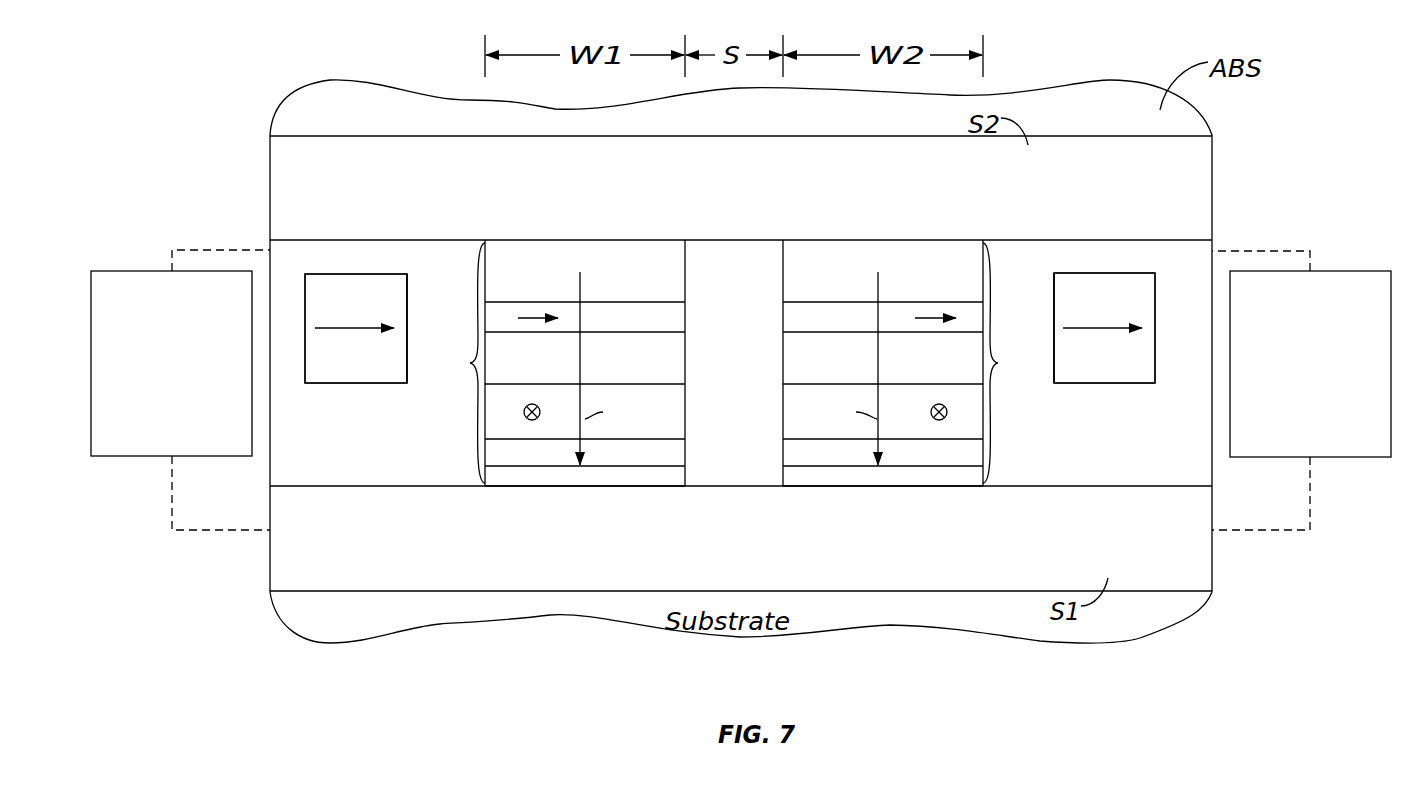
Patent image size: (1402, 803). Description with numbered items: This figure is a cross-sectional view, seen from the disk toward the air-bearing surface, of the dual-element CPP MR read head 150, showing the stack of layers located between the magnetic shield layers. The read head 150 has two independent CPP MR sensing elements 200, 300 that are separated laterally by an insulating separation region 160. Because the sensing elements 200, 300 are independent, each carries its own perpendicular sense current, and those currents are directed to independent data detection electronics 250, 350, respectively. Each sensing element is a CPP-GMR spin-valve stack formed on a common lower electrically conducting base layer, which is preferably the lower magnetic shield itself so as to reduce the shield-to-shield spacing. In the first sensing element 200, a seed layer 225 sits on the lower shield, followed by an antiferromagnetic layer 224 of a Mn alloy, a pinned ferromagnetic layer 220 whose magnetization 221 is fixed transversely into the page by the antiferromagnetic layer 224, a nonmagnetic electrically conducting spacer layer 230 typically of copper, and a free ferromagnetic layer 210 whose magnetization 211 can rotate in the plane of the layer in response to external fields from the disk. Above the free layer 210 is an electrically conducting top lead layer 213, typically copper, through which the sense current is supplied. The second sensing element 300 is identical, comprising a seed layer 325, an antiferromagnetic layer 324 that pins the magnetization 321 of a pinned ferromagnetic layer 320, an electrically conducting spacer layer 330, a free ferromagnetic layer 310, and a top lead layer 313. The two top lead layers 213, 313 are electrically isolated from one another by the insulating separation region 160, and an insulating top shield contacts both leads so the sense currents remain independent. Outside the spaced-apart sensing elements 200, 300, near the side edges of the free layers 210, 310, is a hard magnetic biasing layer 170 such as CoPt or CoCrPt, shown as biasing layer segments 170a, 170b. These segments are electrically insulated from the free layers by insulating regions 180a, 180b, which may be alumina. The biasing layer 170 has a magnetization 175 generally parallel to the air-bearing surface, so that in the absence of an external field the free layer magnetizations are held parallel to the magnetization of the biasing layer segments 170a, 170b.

The read head 150 is at (366, 50).
The insulating separation region 160 is at (762, 248).
The hard magnetic biasing layer 170 is at (305, 287).
The biasing layer segment 170a is at (338, 370).
The biasing layer segment 170b is at (1122, 377).
The magnetization 175 is at (378, 326).
The insulating region 180a is at (418, 328).
The insulating region 180b is at (1040, 343).
The CPP MR sensing element 200 is at (577, 380).
The free ferromagnetic layer 210 is at (677, 330).
The magnetization direction 211 is at (523, 316).
The top lead layer 213 is at (677, 268).
The pinned ferromagnetic layer 220 is at (677, 416).
The magnetization direction 221 is at (533, 403).
The antiferromagnetic layer 224 is at (677, 462).
The seed layer 225 is at (655, 477).
The nonmagnetic electrically conducting spacer layer 230 is at (677, 362).
The data detection electronics 250 is at (125, 270).
The CPP MR sensing element 300 is at (886, 380).
The free ferromagnetic layer 310 is at (788, 327).
The top lead layer 313 is at (788, 295).
The pinned ferromagnetic layer 320 is at (788, 415).
The magnetization direction 321 is at (938, 313).
The antiferromagnetic layer 324 is at (788, 465).
The seed layer 325 is at (807, 477).
The electrically conducting spacer layer 330 is at (788, 361).
The data detection electronics 350 is at (1335, 270).